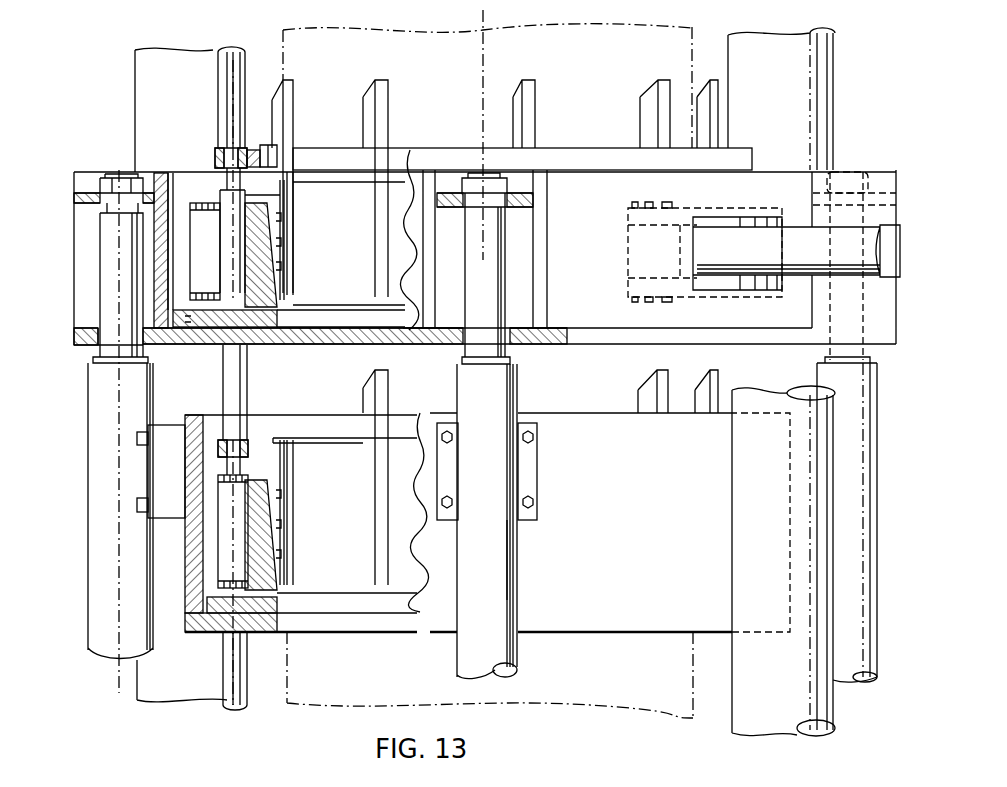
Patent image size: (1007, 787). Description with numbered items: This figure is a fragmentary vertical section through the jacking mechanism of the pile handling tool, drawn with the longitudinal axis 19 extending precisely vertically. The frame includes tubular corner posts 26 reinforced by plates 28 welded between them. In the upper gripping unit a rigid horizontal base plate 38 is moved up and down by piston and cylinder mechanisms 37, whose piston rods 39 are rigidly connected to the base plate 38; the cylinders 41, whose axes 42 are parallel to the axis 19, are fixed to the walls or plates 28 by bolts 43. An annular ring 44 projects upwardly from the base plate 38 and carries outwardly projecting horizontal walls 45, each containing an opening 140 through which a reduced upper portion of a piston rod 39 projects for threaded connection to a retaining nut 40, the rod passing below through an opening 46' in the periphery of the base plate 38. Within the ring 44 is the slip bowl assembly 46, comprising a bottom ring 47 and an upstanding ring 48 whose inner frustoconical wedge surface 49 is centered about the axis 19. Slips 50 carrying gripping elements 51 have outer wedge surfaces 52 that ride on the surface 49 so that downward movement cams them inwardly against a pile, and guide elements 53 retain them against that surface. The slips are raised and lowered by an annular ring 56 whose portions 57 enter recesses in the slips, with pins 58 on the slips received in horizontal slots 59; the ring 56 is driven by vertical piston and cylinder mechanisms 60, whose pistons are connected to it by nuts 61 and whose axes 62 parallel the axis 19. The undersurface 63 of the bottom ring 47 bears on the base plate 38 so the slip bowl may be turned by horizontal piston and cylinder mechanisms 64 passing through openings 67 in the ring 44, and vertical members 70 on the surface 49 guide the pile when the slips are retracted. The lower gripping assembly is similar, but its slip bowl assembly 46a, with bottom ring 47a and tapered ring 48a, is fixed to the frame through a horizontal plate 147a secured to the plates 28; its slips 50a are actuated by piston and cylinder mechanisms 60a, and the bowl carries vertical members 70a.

The longitudinal axis 19 is at (483, 60).
The corner posts 26 is at (140, 78).
The plates 28 is at (187, 537).
The piston and cylinder mechanisms 37 is at (88, 490).
The base plate 38 is at (82, 326).
The piston rods 39 is at (497, 242).
The retaining nut 40 is at (100, 187).
The cylinders 41 is at (520, 525).
The axes 42 is at (118, 282).
The bolts 43 is at (137, 442).
The annular ring 44 is at (157, 173).
The horizontal walls 45 is at (80, 212).
The slip bowl assembly 46 is at (294, 156).
The opening 46' is at (503, 307).
The lower slip bowl assembly 46a is at (302, 595).
The bottom ring 47 is at (277, 317).
The lower bottom ring 47a is at (227, 598).
The upstanding ring 48 is at (280, 287).
The upper tapered ring 48a is at (283, 593).
The wedge surface 49 is at (280, 270).
The slips 50 is at (280, 217).
The lower slips 50a is at (283, 533).
The gripping elements 51 is at (283, 227).
The outer wedge surfaces 52 is at (233, 187).
The guide elements 53 is at (280, 200).
The annular ring 56 is at (222, 53).
The portions 57 is at (260, 147).
The pins 58 is at (292, 148).
The horizontal slots 59 is at (290, 437).
The piston and cylinder mechanisms 60 is at (222, 230).
The lower piston and cylinder mechanisms 60a is at (230, 560).
The nuts 61 is at (217, 447).
The axes 62 is at (233, 263).
The undersurface 63 is at (228, 342).
The horizontal piston and cylinder mechanisms 64 is at (793, 225).
The openings 67 is at (723, 282).
The vertically elongated members 70 is at (530, 122).
The lower vertical members 70a is at (650, 388).
The opening 140 is at (532, 198).
The horizontal plate 147a is at (90, 648).